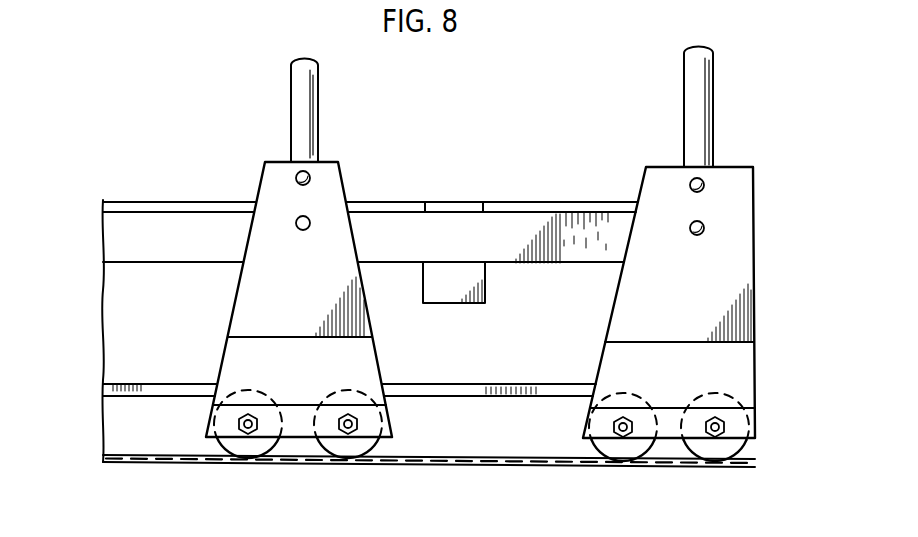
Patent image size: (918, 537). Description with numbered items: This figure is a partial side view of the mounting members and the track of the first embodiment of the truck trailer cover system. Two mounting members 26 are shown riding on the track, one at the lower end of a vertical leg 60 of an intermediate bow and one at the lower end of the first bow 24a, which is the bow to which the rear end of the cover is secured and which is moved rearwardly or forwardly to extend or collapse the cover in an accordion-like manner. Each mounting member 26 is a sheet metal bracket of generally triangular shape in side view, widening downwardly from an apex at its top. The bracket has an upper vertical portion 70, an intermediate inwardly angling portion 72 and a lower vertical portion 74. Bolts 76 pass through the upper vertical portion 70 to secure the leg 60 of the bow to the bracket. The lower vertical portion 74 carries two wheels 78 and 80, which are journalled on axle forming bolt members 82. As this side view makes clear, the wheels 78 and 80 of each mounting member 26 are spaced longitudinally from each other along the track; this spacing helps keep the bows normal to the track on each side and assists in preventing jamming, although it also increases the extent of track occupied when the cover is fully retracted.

The vertical leg 60 is at (300, 96).
The first bow 24a is at (713, 121).
The mounting member 26 is at (232, 183).
The bolt 76 is at (312, 178).
The upper vertical portion 70 is at (255, 287).
The intermediate inwardly angling portion 72 is at (252, 356).
The lower vertical portion 74 is at (210, 419).
The wheel 78 is at (254, 445).
The wheel 80 is at (363, 445).
The axle forming bolt member 82 is at (234, 456).